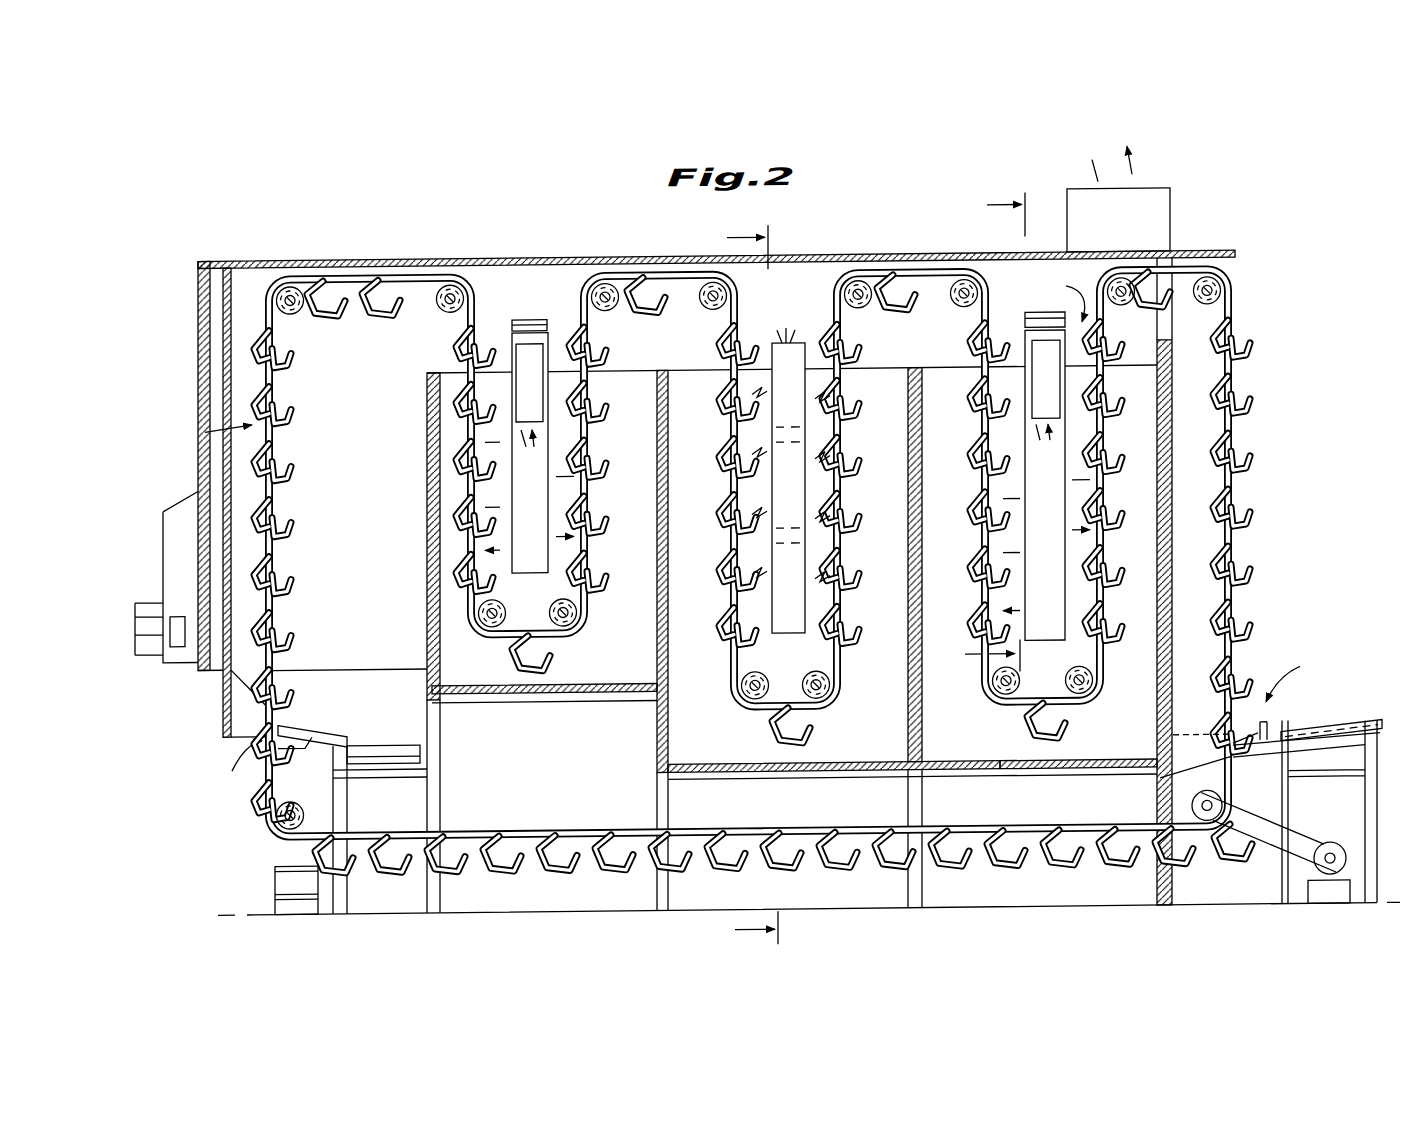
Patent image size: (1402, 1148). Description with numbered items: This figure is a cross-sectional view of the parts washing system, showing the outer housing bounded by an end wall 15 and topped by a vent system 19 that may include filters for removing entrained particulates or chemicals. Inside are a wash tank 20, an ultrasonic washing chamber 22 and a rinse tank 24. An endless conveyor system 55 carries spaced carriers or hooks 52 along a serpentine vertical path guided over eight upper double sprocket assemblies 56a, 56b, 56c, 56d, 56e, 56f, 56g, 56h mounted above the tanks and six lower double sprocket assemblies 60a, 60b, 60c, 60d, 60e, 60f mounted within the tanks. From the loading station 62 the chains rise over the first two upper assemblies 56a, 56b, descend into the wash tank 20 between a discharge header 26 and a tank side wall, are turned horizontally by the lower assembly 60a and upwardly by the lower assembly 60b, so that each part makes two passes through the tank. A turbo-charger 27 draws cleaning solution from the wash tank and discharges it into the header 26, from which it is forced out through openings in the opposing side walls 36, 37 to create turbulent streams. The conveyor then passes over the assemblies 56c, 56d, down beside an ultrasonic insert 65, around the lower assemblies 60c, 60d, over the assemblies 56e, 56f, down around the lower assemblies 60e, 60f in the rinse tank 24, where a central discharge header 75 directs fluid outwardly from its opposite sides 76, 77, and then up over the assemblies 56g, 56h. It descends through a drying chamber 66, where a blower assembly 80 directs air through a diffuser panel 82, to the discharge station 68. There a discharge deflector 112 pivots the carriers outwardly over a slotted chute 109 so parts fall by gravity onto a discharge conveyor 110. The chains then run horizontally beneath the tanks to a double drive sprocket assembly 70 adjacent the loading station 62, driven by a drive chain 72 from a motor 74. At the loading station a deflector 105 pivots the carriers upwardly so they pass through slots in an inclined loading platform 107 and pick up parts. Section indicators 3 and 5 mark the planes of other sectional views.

The end wall 15 is at (198, 332).
The diffuser panel 82 is at (223, 366).
The discharge deflector 112 is at (233, 716).
The drying chamber 66 is at (205, 430).
The discharge station 68 is at (220, 764).
The vent system 19 is at (1170, 217).
The section line 3 is at (984, 426).
The section line 5 is at (744, 575).
The endless conveyor system 55 is at (468, 318).
The carriers or hooks 52 is at (292, 474).
The double sprocket assembly 56h is at (293, 286).
The double sprocket assembly 56g is at (478, 250).
The double sprocket assembly 56f is at (607, 286).
The double sprocket assembly 56e is at (714, 286).
The double sprocket assembly 56d is at (860, 286).
The double sprocket assembly 56c is at (985, 255).
The double sprocket assembly 56b is at (1124, 286).
The double sprocket assembly 56a is at (1222, 286).
The lower double sprocket assembly 60f is at (478, 611).
The lower double sprocket assembly 60e is at (577, 611).
The lower double sprocket assembly 60d is at (752, 701).
The lower double sprocket assembly 60c is at (820, 701).
The lower double sprocket assembly 60b is at (1003, 699).
The lower double sprocket assembly 60a is at (1082, 699).
The double drive sprocket assembly 70 is at (1190, 810).
The rinse tank 24 is at (543, 694).
The ultrasonic washing chamber 22 is at (800, 777).
The wash tank 20 is at (1075, 774).
The deflector 105 is at (1197, 758).
The discharge header 75 is at (549, 324).
The side of discharge header 76 is at (498, 494).
The side of discharge header 77 is at (550, 492).
The ultrasonic insert 65 is at (799, 341).
The turbo-charger 27 is at (1027, 326).
The discharge header 26 is at (1061, 296).
The side wall of distribution header 36 is at (1025, 486).
The side wall of distribution header 37 is at (1090, 494).
The blower assembly 80 is at (150, 649).
The chute 109 is at (333, 702).
The discharge conveyor 110 is at (390, 743).
The loading station 62 is at (1306, 772).
The loading platform 107 is at (1347, 733).
The drive chain 72 is at (1263, 868).
The motor 74 is at (1336, 850).